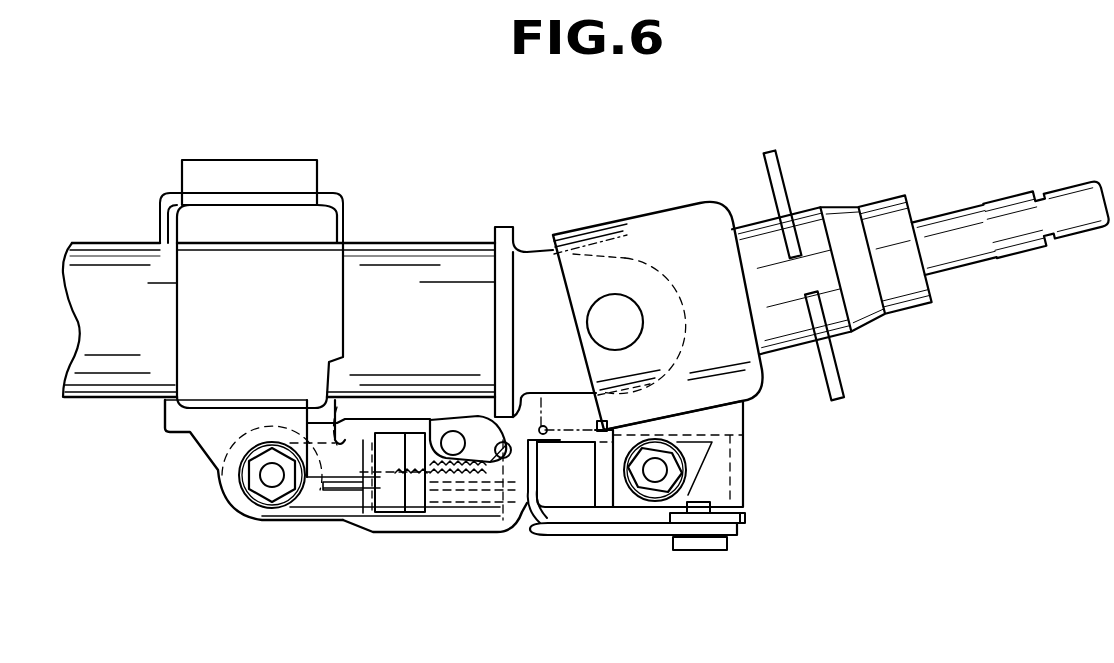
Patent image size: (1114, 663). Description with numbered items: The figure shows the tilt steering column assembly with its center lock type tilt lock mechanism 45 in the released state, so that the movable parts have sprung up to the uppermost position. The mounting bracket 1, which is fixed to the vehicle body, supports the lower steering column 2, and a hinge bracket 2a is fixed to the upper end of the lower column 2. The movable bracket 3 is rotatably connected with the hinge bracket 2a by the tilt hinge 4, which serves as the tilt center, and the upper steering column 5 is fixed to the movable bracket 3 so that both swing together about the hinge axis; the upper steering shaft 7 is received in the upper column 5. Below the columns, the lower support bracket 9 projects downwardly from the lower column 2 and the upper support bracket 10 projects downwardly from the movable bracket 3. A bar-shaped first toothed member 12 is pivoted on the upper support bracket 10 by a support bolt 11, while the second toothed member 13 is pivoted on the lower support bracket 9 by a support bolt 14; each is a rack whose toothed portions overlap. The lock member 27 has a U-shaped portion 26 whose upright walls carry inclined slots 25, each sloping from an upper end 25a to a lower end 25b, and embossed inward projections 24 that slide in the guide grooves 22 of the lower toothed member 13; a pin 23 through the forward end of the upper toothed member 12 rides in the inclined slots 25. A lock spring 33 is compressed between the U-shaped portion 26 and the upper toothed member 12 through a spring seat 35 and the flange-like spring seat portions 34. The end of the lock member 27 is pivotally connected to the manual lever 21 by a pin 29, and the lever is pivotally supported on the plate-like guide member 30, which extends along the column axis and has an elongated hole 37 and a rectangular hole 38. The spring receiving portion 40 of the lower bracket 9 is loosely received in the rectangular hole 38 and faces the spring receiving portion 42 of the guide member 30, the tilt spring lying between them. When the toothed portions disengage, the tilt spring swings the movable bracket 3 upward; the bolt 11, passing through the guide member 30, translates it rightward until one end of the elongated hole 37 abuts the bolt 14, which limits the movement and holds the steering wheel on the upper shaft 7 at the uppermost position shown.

The mounting bracket 1 is at (271, 160).
The lower steering column 2 is at (418, 247).
The hinge bracket 2a is at (507, 230).
The movable bracket 3 is at (668, 215).
The tilt hinge 4 is at (609, 312).
The upper steering column 5 is at (840, 216).
The upper steering shaft 7 is at (930, 212).
The lower support bracket 9 is at (196, 448).
The upper support bracket 10 is at (757, 418).
The support bolt 11 is at (658, 482).
The first toothed member 12 is at (581, 460).
The second toothed member 13 is at (305, 507).
The support bolt 14 is at (270, 480).
The manual lever 21 is at (748, 518).
The guide groove 22 is at (340, 500).
The pin 23 is at (452, 433).
The inward projection 24 is at (505, 520).
The inclined slot 25 is at (503, 446).
The upper end of inclined slot 25a is at (448, 433).
The lower end of inclined slot 25b is at (506, 443).
The U-shaped portion 26 is at (472, 530).
The lock member 27 is at (613, 537).
The pin 29 is at (705, 552).
The guide member 30 is at (430, 530).
The lock spring 33 is at (541, 410).
The spring seat portion 34 is at (549, 530).
The spring seat 35 is at (608, 423).
The elongated hole 37 is at (337, 407).
The rectangular hole 38 is at (420, 440).
The spring receiving portion 40 is at (397, 433).
The spring receiving portion 42 is at (747, 462).
The tilt lock mechanism 45 is at (385, 552).